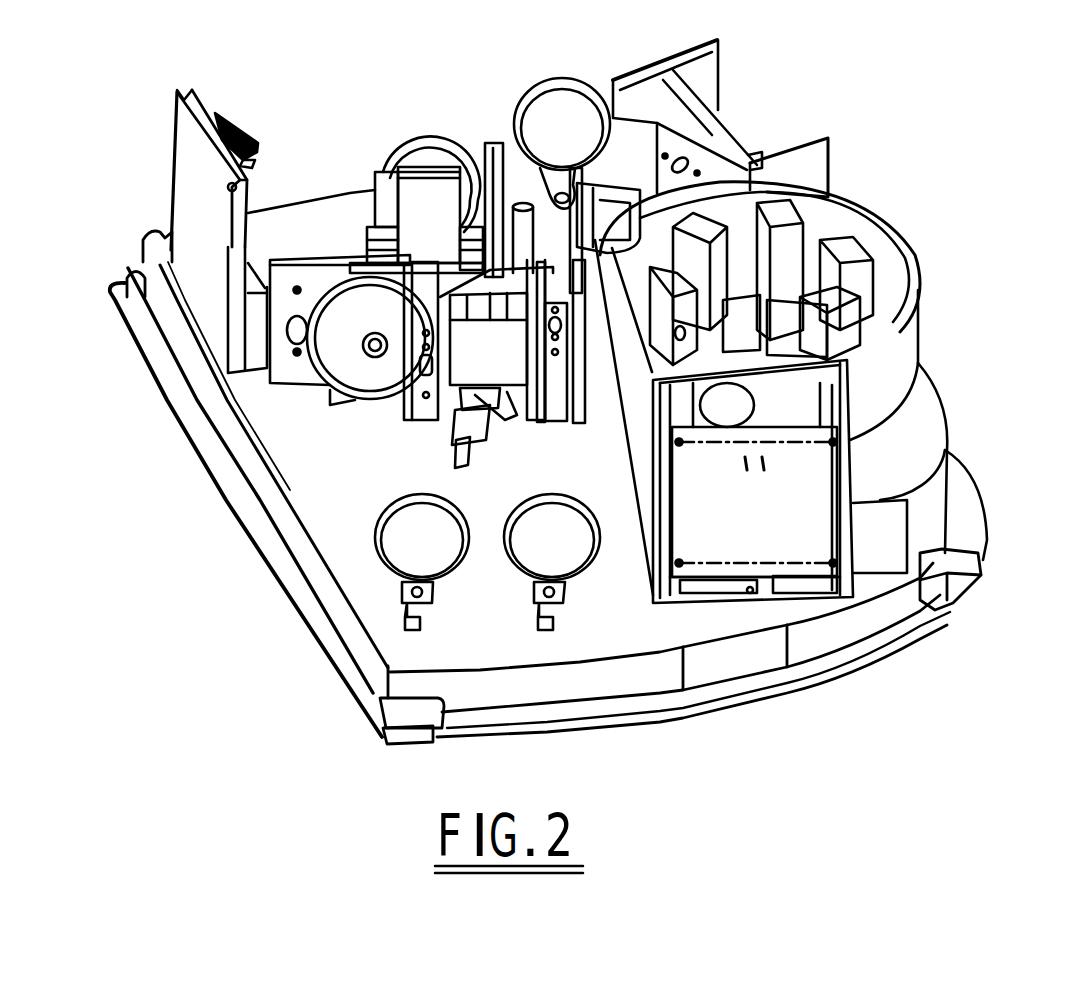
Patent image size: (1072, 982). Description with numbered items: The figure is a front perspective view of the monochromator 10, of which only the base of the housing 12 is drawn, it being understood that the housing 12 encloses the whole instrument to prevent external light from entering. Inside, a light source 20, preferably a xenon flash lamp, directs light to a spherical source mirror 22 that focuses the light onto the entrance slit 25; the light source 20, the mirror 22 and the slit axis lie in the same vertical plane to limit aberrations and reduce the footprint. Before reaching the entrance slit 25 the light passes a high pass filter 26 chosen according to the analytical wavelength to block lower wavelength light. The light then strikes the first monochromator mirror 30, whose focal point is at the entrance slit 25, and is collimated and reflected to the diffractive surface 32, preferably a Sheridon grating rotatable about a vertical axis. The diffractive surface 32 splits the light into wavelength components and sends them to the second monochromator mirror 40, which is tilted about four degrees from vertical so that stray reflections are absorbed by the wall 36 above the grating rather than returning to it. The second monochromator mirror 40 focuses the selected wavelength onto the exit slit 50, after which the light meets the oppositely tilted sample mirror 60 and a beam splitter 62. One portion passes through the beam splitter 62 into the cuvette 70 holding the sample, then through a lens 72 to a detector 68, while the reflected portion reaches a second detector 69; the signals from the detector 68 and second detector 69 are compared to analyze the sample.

The monochromator 10 is at (983, 208).
The housing 12 is at (330, 586).
The light source 20 is at (408, 192).
The source mirror 22 is at (427, 155).
The entrance slit 25 is at (425, 355).
The filter 26 is at (368, 373).
The first monochromator mirror 30 is at (392, 558).
The diffractive surface 32 is at (488, 386).
The wall 36 is at (513, 300).
The second monochromator mirror 40 is at (572, 558).
The exit slit 50 is at (565, 325).
The sample mirror 60 is at (567, 107).
The beam splitter 62 is at (623, 208).
The detector 68 is at (764, 525).
The second detector 69 is at (703, 120).
The cuvette 70 is at (690, 312).
The lens 72 is at (733, 400).